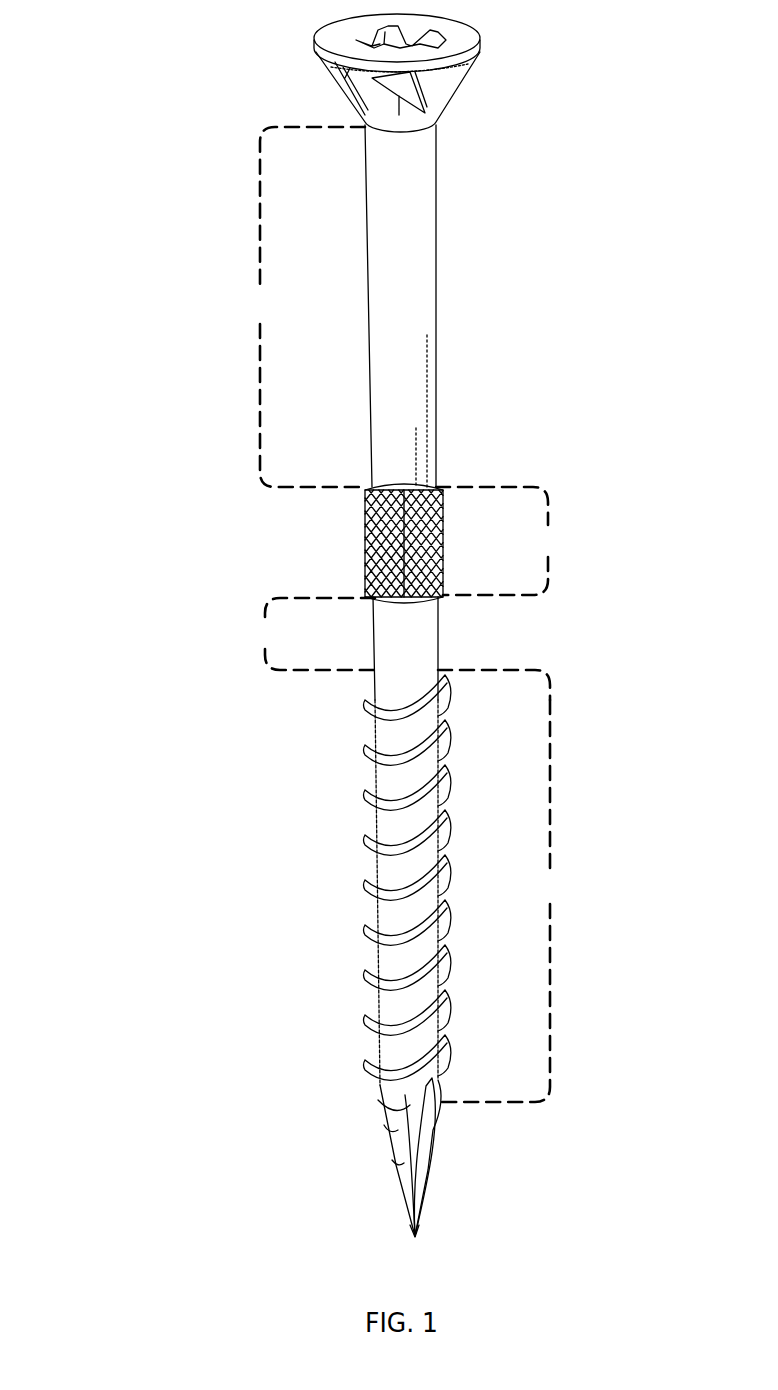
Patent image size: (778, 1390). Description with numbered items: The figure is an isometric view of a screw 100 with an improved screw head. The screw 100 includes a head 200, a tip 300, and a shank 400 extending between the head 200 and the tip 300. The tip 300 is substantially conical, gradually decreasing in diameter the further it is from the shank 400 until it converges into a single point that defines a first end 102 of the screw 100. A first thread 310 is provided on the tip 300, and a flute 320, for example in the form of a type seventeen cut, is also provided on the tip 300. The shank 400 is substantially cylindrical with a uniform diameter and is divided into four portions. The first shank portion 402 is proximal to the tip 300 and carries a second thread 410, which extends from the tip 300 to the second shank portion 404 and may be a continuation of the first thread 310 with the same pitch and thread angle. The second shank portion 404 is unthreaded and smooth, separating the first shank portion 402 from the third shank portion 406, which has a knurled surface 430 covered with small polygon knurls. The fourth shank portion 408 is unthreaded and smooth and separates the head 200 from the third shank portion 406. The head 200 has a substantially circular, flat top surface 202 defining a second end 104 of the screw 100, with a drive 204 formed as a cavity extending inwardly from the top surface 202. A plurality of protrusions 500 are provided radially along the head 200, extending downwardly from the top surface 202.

The screw 100 is at (124, 78).
The first end 102 is at (416, 1236).
The second end 104 is at (362, 14).
The head 200 is at (456, 62).
The top surface 202 is at (463, 38).
The drive 204 is at (359, 37).
The tip 300 is at (394, 1167).
The first thread 310 is at (442, 1132).
The flute 320 is at (413, 1127).
The shank 400 is at (436, 340).
The first shank portion 402 is at (550, 872).
The second shank portion 404 is at (265, 617).
The third shank portion 406 is at (548, 525).
The fourth shank portion 408 is at (260, 290).
The second thread 410 is at (375, 845).
The knurled surface 430 is at (367, 538).
The protrusions 500 is at (340, 79).